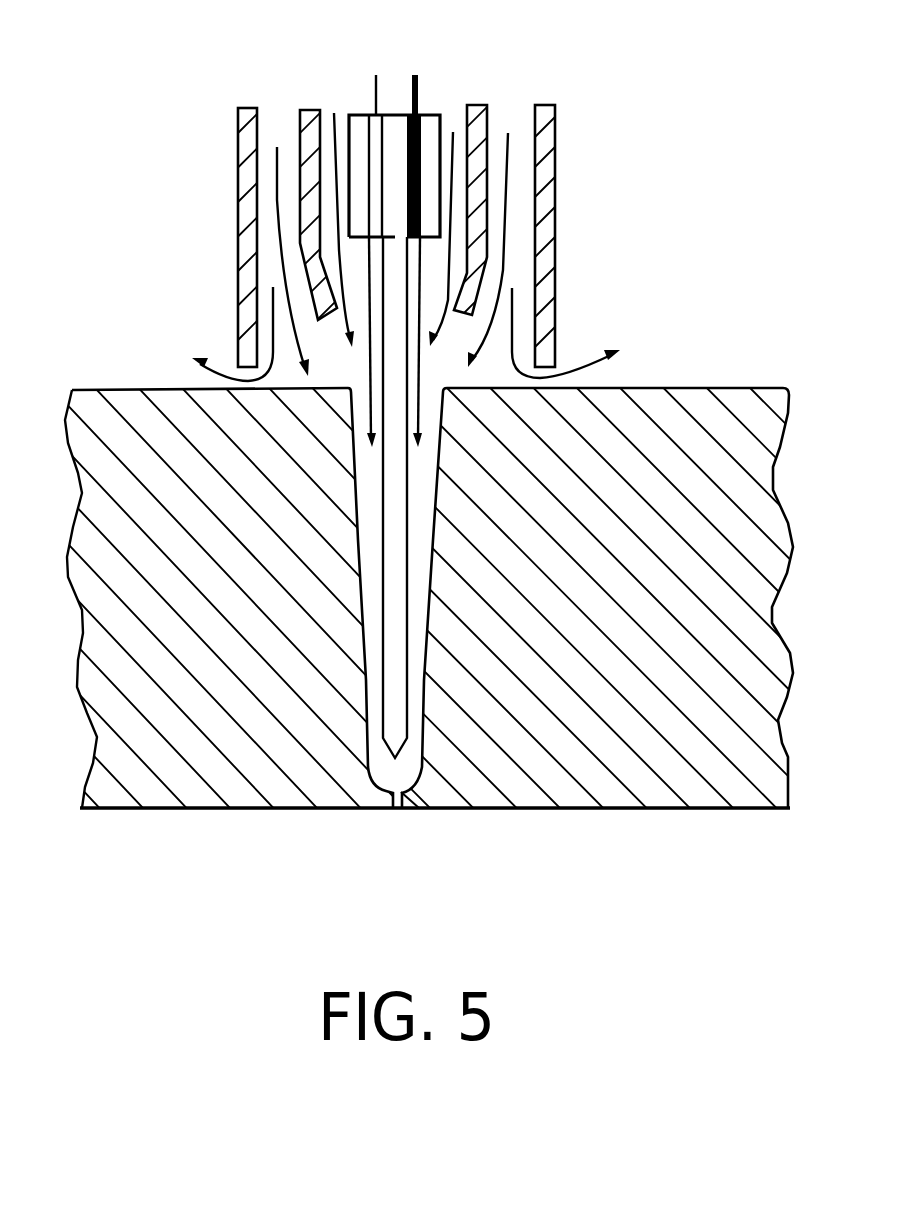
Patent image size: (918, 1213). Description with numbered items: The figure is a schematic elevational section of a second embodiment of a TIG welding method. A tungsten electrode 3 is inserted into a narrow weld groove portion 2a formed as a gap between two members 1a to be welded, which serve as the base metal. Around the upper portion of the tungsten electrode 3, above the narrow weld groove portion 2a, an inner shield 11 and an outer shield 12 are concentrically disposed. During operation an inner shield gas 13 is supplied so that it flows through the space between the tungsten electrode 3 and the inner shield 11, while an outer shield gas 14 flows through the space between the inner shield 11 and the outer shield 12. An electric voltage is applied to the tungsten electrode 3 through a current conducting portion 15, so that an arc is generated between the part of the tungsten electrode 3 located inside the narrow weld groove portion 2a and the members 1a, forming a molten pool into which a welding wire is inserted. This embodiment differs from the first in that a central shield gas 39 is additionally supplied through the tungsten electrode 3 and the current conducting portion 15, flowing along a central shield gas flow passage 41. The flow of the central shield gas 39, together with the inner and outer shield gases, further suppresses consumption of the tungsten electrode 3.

The member to be welded 1a is at (113, 400).
The narrow weld groove portion 2a is at (419, 735).
The tungsten electrode 3 is at (398, 600).
The inner shield 11 is at (492, 117).
The outer shield 12 is at (549, 178).
The inner shield gas 13 is at (331, 147).
The outer shield gas 14 is at (277, 195).
The current conducting portion 15 is at (441, 110).
The central shield gas 39 is at (376, 77).
The central shield gas flow passage 41 is at (416, 79).